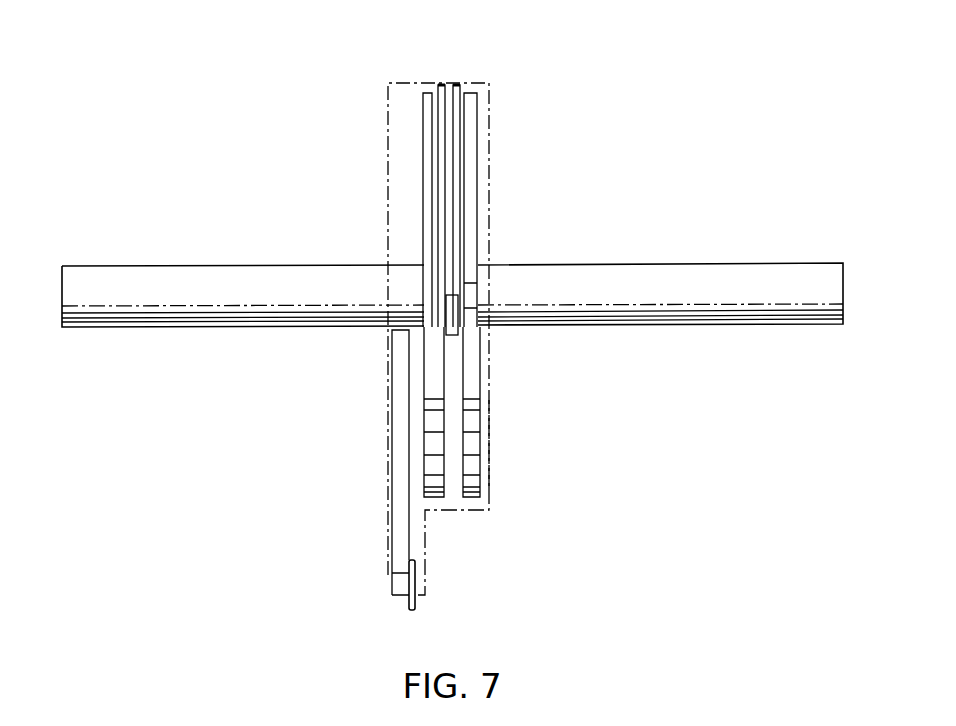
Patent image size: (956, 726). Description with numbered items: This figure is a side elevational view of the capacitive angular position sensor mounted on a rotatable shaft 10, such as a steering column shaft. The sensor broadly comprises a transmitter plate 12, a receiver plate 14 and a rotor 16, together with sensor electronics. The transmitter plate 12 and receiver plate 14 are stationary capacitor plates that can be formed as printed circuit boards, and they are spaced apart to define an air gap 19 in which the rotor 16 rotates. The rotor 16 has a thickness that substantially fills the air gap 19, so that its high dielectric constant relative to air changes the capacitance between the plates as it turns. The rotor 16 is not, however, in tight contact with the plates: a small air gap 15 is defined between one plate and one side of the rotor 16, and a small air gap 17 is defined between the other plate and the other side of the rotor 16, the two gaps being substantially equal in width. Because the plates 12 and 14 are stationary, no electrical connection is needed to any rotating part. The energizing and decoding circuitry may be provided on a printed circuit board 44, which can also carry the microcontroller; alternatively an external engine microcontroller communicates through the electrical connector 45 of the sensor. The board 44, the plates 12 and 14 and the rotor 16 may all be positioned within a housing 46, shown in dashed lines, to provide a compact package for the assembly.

The shaft 10 is at (662, 272).
The transmitter plate 12 is at (472, 161).
The receiver plate 14 is at (421, 125).
The air gap 15 is at (439, 83).
The rotor 16 is at (451, 132).
The air gap 17 is at (459, 83).
The air gap 19 is at (458, 512).
The printed circuit board 44 is at (390, 405).
The electrical connector 45 is at (410, 606).
The housing 46 is at (492, 465).